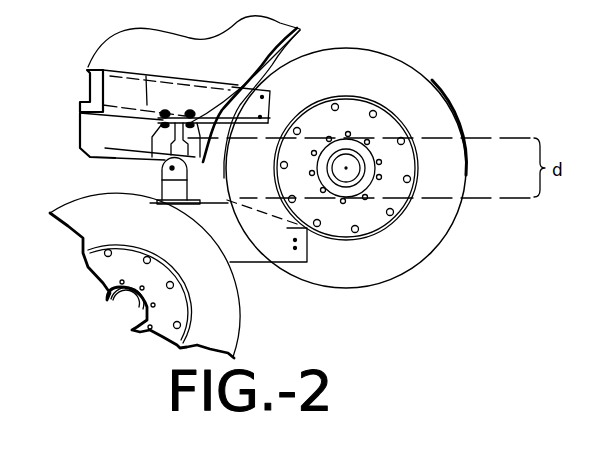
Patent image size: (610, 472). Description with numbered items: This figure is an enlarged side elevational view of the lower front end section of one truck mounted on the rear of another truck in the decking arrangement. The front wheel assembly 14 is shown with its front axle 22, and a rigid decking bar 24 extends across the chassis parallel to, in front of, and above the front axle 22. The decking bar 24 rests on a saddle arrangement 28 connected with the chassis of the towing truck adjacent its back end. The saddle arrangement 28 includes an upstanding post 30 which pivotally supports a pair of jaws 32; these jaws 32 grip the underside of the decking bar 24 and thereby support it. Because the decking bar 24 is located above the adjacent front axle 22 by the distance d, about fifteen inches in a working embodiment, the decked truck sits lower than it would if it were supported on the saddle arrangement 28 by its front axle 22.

The wheel assembly 14 is at (385, 258).
The front axle 22 is at (330, 183).
The decking bar 24 is at (298, 28).
The saddle arrangement 28 is at (140, 181).
The upstanding post 30 is at (83, 250).
The jaws 32 is at (152, 175).